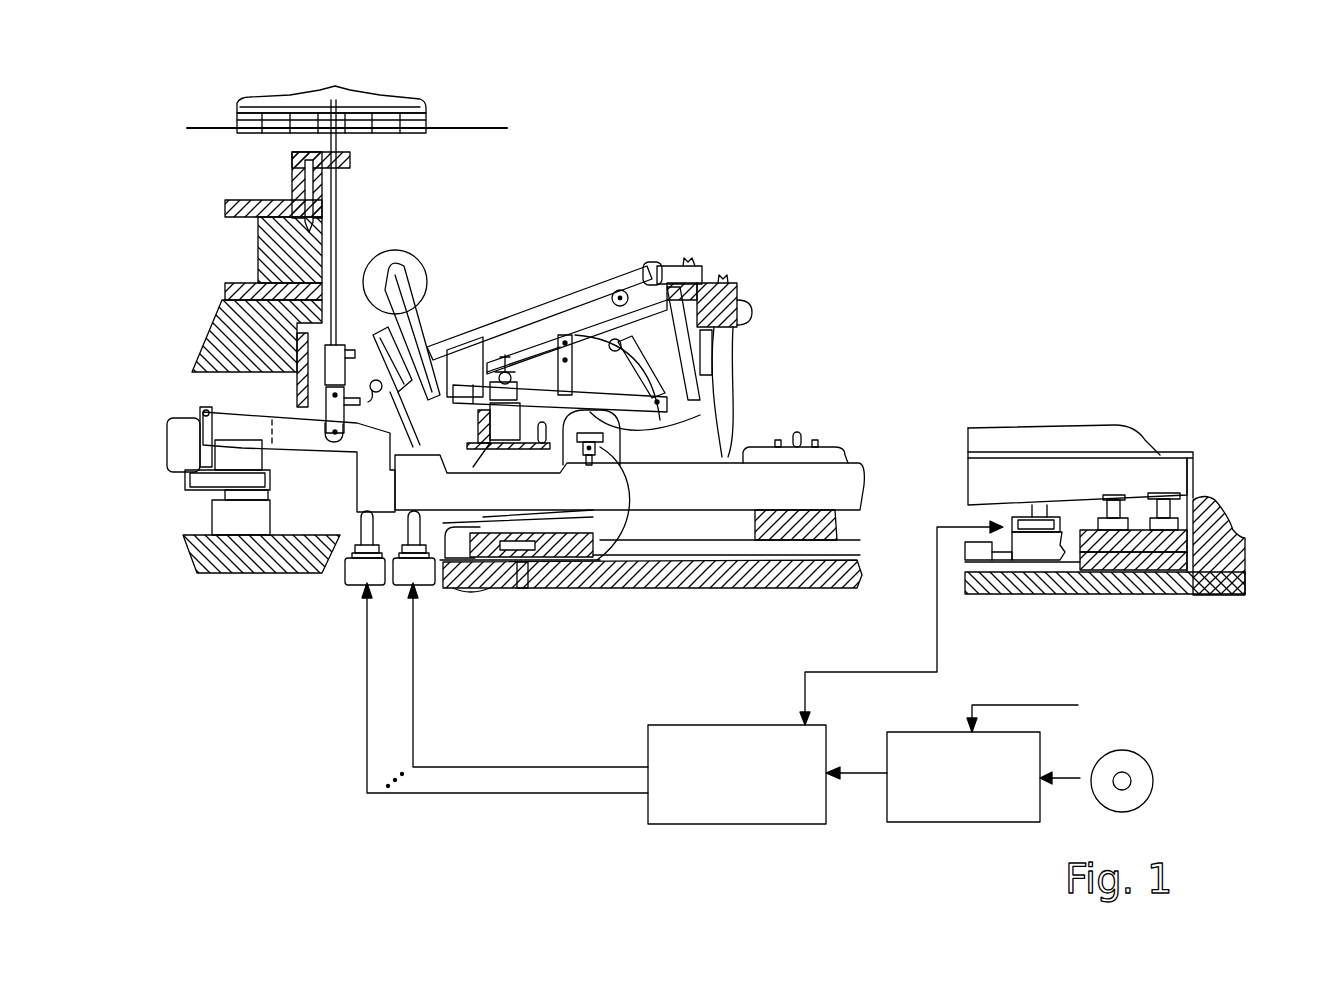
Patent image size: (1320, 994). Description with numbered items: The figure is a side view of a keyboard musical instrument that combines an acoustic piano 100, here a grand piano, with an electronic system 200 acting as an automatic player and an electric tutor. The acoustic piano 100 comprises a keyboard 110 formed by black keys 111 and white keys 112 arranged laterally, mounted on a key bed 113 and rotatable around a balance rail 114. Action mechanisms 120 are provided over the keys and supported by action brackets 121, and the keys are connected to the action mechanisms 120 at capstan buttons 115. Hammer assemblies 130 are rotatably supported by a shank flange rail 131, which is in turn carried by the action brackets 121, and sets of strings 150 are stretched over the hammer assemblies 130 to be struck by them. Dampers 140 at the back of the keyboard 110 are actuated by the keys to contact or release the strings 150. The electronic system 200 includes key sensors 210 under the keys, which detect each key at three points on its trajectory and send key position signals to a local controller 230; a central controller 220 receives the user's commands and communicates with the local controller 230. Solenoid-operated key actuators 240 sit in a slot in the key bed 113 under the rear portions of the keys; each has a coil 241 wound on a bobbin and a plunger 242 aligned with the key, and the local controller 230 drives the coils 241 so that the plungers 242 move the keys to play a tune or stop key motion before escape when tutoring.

The acoustic piano 100 is at (863, 238).
The keyboard 110 is at (1105, 452).
The black keys 111 is at (1080, 423).
The white keys 112 is at (1168, 447).
The key bed 113 is at (623, 585).
The balance rail 114 is at (753, 523).
The capstan buttons 115 is at (558, 583).
The action mechanisms 120 is at (690, 437).
The action brackets 121 is at (720, 360).
The hammer assemblies 130 is at (410, 252).
The shank flange rail 131 is at (743, 283).
The dampers 140 is at (405, 97).
The sets of strings 150 is at (488, 133).
The electronic system 200 is at (313, 752).
The key sensors 210 is at (990, 517).
The central controller 220 is at (922, 730).
The local controller 230 is at (738, 725).
The solenoid-operated key actuators 240 is at (350, 587).
The coil 241 is at (370, 575).
The plunger 242 is at (358, 535).